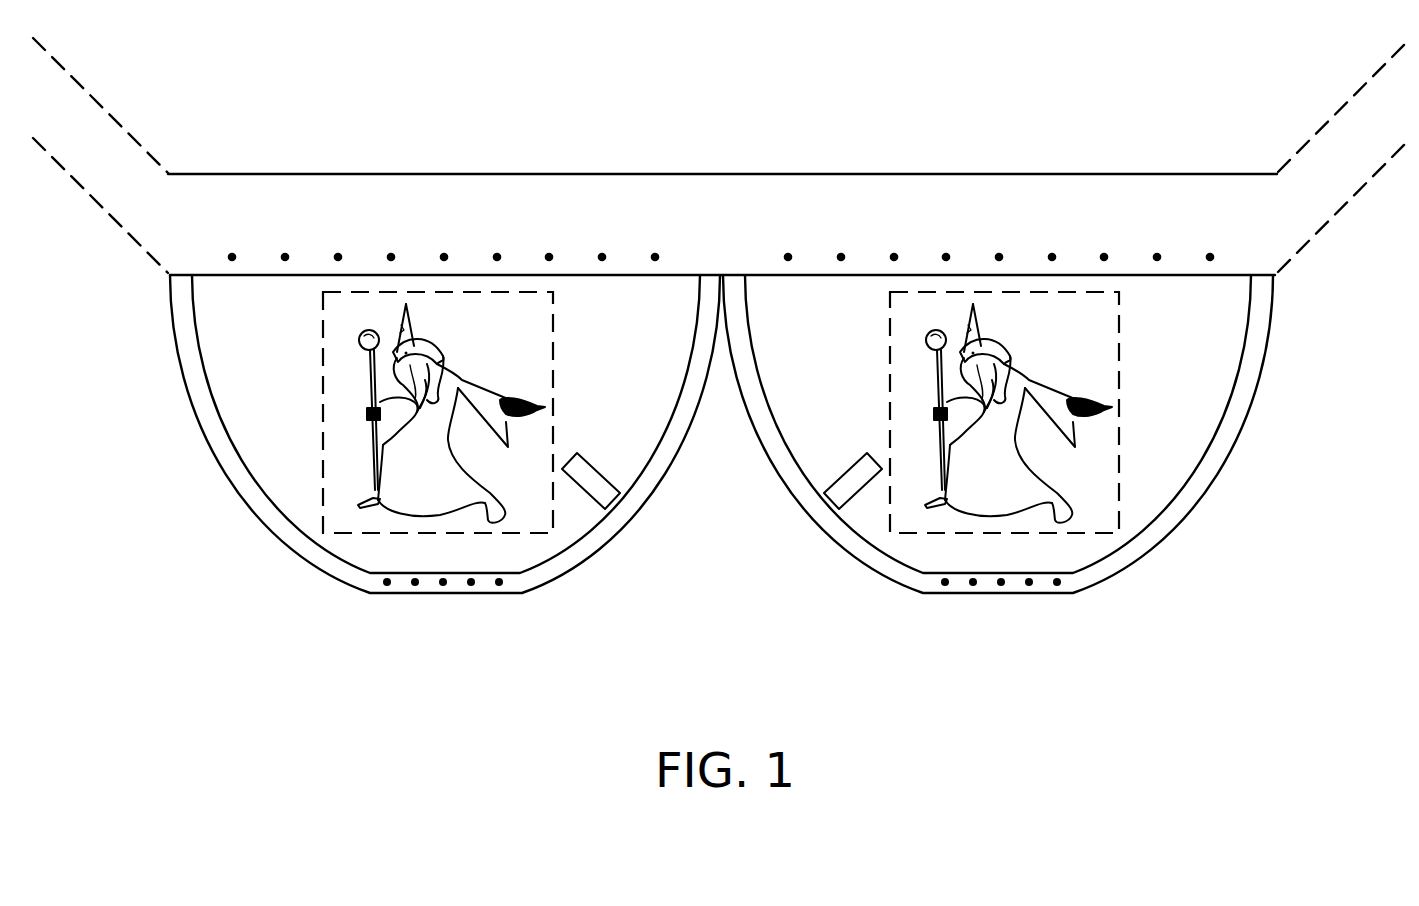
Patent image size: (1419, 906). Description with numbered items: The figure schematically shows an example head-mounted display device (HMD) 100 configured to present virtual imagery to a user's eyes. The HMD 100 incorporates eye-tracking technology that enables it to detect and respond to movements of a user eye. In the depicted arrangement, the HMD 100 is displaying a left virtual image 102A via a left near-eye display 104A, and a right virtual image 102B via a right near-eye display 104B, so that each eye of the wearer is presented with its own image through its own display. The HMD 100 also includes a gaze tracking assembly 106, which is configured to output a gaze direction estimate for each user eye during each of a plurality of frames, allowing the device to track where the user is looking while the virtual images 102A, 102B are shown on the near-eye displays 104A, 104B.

The head-mounted display device 100 is at (282, 116).
The left virtual image 102A is at (323, 385).
The right virtual image 102B is at (888, 358).
The left near-eye display 104A is at (270, 528).
The right near-eye display 104B is at (832, 538).
The gaze tracking assembly 106 is at (254, 240).